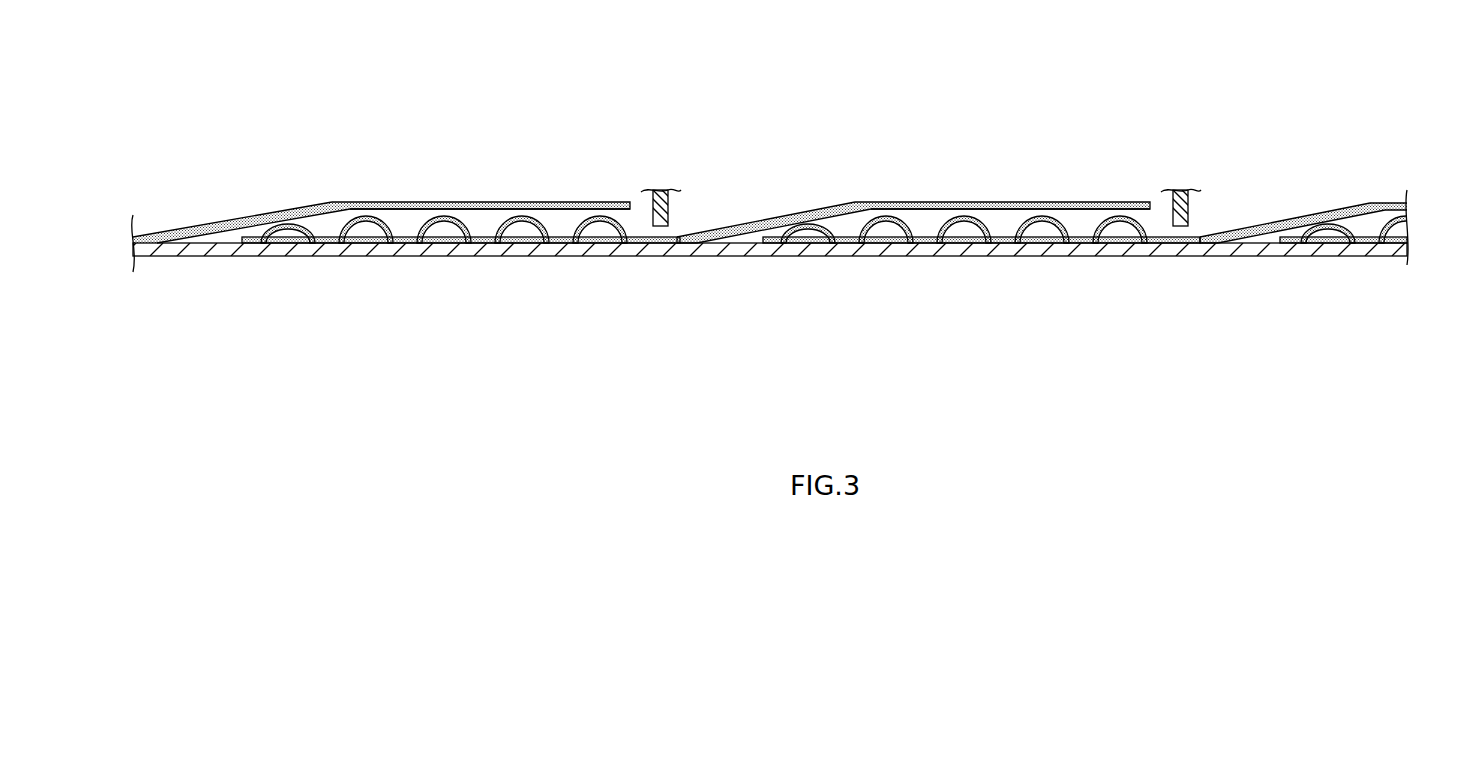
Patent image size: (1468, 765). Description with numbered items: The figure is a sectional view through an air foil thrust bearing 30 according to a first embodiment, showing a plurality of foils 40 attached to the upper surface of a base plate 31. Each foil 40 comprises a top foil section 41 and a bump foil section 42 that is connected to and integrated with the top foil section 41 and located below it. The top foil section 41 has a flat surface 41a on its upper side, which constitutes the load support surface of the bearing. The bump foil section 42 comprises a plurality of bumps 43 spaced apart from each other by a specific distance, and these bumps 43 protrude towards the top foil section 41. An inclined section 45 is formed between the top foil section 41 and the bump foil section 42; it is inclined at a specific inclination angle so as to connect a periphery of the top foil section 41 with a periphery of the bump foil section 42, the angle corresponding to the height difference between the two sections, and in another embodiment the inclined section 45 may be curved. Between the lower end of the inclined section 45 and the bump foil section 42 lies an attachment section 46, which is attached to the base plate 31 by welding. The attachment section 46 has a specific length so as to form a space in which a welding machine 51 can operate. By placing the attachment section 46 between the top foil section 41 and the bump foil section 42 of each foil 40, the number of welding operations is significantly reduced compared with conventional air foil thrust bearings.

The air foil thrust bearing 30 is at (205, 42).
The base plate 31 is at (713, 253).
The foil 40 is at (320, 178).
The top foil section 41 is at (564, 200).
The flat surface 41a is at (406, 206).
The bump foil section 42 is at (443, 240).
The bump 43 is at (366, 217).
The inclined section 45 is at (252, 222).
The attachment section 46 is at (677, 238).
The welding machine 51 is at (657, 190).